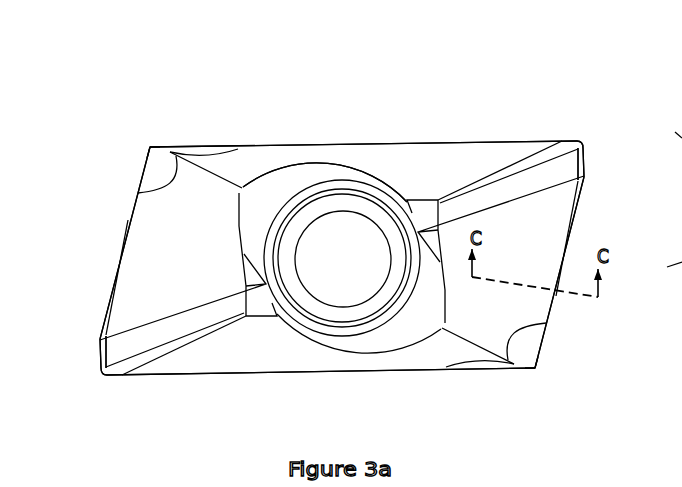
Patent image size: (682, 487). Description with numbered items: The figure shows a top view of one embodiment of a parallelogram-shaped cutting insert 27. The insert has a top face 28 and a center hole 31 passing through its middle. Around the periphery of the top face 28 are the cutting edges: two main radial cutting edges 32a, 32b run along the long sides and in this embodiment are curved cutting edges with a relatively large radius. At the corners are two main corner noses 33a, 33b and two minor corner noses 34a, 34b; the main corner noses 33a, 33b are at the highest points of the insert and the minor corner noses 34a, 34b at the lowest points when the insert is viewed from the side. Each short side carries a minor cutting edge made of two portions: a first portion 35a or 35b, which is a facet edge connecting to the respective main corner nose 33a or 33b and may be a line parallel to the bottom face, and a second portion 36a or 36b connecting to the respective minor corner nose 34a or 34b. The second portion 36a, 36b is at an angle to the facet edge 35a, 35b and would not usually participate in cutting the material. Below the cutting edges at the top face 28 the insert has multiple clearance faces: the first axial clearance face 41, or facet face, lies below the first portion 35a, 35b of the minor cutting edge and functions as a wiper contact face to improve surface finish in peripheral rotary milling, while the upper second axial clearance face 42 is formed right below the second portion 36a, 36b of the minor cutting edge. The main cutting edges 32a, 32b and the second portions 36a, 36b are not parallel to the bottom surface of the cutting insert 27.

The cutting insert 27 is at (449, 122).
The top face 28 is at (403, 164).
The center hole 31 is at (344, 268).
The main radial cutting edge 32a is at (286, 378).
The main radial cutting edge 32b is at (276, 142).
The main corner nose 33a is at (101, 377).
The main corner nose 33b is at (579, 139).
The minor corner nose 34a is at (538, 373).
The minor corner nose 34b is at (147, 145).
The first portion of the minor cutting edge 35a is at (97, 357).
The first portion of the minor cutting edge 35b is at (586, 152).
The second portion of the minor cutting edge 36a is at (574, 240).
The second portion of the minor cutting edge 36b is at (116, 264).
The first axial clearance face 41 is at (667, 135).
The upper second axial clearance face 42 is at (662, 270).